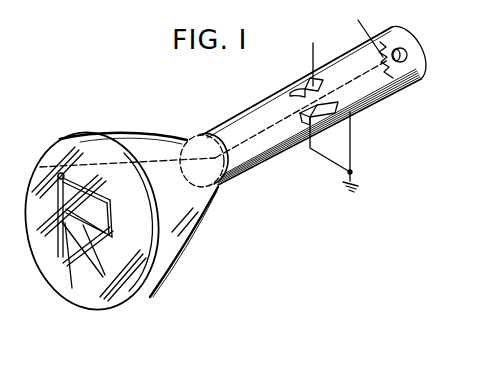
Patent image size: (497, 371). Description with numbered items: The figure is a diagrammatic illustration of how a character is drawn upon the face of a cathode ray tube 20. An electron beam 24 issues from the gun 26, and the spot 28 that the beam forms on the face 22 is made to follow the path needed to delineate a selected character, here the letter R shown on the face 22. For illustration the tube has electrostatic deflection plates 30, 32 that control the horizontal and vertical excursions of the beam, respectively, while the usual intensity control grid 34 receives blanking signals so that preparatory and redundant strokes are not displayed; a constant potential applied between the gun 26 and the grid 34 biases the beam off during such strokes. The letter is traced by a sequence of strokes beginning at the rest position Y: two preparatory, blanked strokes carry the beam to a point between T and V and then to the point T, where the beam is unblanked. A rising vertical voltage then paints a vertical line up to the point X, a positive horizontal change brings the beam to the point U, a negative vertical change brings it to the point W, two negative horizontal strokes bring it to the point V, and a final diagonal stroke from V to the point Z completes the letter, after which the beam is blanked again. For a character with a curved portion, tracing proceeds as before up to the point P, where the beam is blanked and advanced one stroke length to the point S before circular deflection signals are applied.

The cathode ray tube 20 is at (215, 214).
The face 22 is at (138, 282).
The electron beam 24 is at (227, 150).
The gun 26 is at (408, 50).
The spot 28 is at (45, 173).
The horizontal electrostatic deflection plates 30 is at (293, 92).
The vertical electrostatic deflection plates 32 is at (310, 83).
The intensity control grid 34 is at (397, 75).
The point X is at (63, 177).
The point P is at (85, 197).
The point U is at (110, 200).
The point S is at (83, 208).
The point V is at (63, 210).
The point W is at (93, 222).
The point T is at (60, 252).
The rest position Y is at (80, 232).
The point Z is at (83, 218).